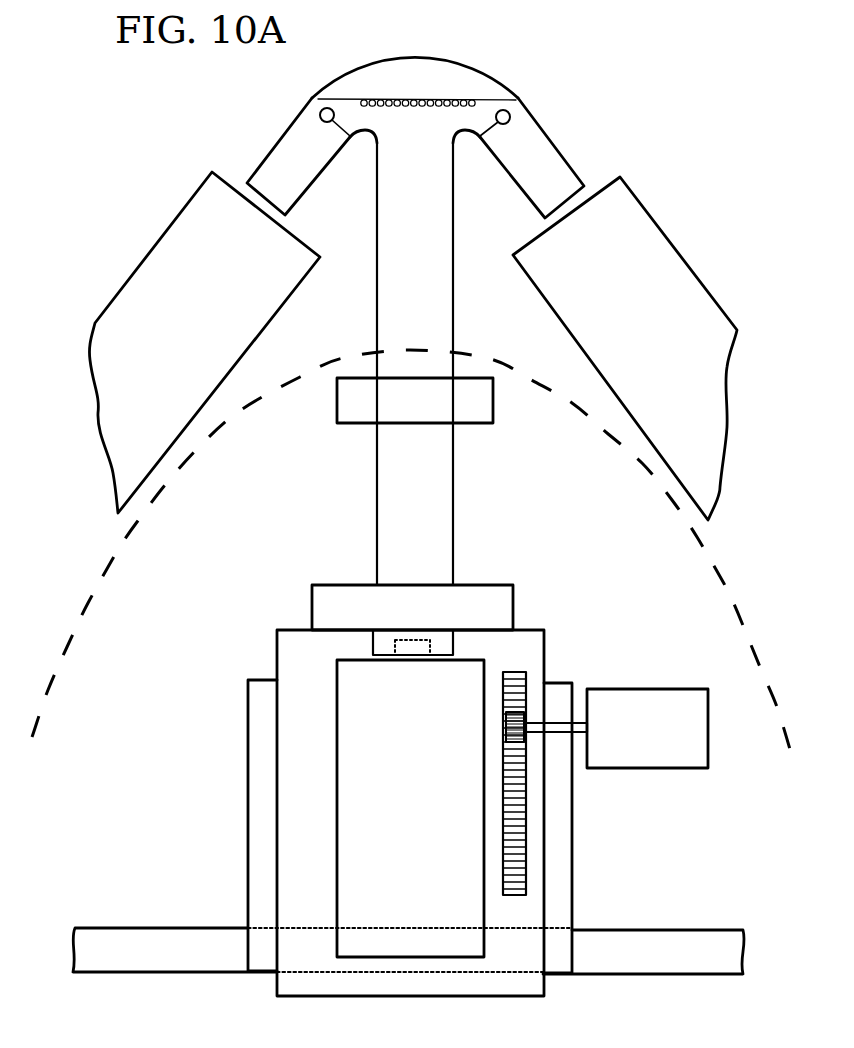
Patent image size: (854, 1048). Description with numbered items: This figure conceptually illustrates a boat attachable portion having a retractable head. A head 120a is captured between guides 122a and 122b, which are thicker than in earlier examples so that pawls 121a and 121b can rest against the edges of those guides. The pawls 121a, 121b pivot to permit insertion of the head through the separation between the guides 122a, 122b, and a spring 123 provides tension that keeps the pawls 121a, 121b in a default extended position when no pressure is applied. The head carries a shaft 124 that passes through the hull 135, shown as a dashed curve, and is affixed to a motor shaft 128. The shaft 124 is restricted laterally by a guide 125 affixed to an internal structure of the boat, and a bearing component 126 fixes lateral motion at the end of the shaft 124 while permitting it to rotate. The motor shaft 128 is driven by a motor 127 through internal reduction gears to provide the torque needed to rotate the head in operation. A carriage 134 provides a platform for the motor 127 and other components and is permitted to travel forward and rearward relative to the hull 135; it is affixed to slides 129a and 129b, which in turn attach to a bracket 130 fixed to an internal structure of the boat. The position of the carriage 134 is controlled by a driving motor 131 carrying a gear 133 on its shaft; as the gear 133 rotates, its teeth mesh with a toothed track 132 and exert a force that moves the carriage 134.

The head 120a is at (422, 58).
The pawl 121a is at (280, 137).
The pawl 121b is at (547, 127).
The guide 122a is at (147, 252).
The guide 122b is at (683, 260).
The spring 123 is at (420, 116).
The shaft 124 is at (445, 496).
The guide 125 is at (353, 425).
The bearing component 126 is at (503, 607).
The motor 127 is at (421, 819).
The motor shaft 128 is at (430, 645).
The slide 129a is at (247, 786).
The slide 129b is at (573, 823).
The bracket 130 is at (655, 930).
The motor 131 is at (655, 740).
The toothed track 132 is at (528, 673).
The gear 133 is at (522, 717).
The carriage 134 is at (277, 650).
The hull 135 is at (740, 612).